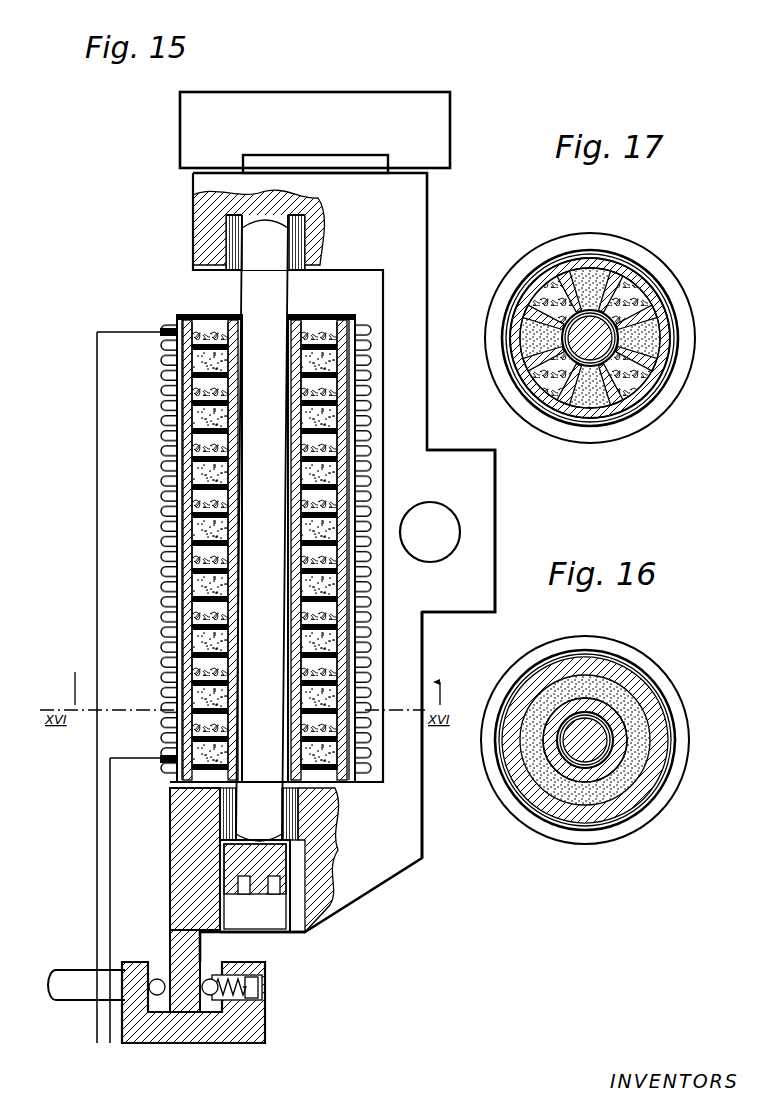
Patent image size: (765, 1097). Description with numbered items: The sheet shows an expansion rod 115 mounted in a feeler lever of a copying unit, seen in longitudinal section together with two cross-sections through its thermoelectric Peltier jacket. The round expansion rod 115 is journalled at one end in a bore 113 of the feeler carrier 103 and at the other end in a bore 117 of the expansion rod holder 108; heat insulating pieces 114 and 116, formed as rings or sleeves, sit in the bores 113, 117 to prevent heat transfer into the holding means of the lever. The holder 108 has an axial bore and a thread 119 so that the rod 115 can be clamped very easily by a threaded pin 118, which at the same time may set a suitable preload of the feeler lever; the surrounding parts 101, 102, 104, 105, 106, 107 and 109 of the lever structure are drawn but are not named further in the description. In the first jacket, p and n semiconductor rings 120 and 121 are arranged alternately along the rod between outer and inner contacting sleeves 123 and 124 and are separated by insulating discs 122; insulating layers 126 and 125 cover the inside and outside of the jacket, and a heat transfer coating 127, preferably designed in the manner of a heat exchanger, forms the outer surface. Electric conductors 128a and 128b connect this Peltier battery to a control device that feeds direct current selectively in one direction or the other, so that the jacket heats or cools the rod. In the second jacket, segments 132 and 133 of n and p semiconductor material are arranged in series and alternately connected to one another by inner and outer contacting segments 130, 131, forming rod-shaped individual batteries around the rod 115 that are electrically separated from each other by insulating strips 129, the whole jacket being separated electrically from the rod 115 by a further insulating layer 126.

In FIG. 15, the head block 101 is at (197, 118).
In FIG. 15, the spacer block 102 is at (300, 163).
In FIG. 15, the feeler carrier 103 is at (213, 221).
In FIG. 15, the body 104 is at (405, 405).
In FIG. 15, the body projection 105 is at (483, 500).
In FIG. 15, the bore 106 is at (450, 529).
In FIG. 15, the lower body portion 107 is at (410, 660).
In FIG. 15, the expansion rod holder 108 is at (385, 855).
In FIG. 15, the base 109 is at (255, 1020).
In FIG. 15, the bore 113 is at (225, 246).
In FIG. 15, the heat insulating piece 114 is at (225, 265).
In FIG. 15, the expansion rod 115 is at (262, 297).
In FIG. 17, the expansion rod 115 is at (535, 272).
In FIG. 16, the expansion rod 115 is at (572, 700).
In FIG. 15, the heat insulating piece 116 is at (222, 812).
In FIG. 15, the bore 117 is at (220, 826).
In FIG. 15, the threaded pin 118 is at (255, 886).
In FIG. 15, the thread 119 is at (226, 908).
In FIG. 15, the p semi-conductor ring 120 is at (183, 441).
In FIG. 15, the n semi-conductor ring 121 is at (182, 412).
In FIG. 16, the n semi-conductor ring 121 is at (605, 785).
In FIG. 15, the insulating disc 122 is at (160, 362).
In FIG. 15, the outer contacting sleeve 123 is at (186, 474).
In FIG. 16, the outer contacting sleeve 123 is at (580, 822).
In FIG. 15, the inner contacting sleeve 124 is at (190, 501).
In FIG. 16, the inner contacting sleeve 124 is at (625, 765).
In FIG. 15, the insulating layer 125 is at (188, 538).
In FIG. 17, the insulating layer 125 is at (577, 262).
In FIG. 16, the insulating layer 125 is at (553, 820).
In FIG. 15, the insulating layer 126 is at (185, 572).
In FIG. 17, the insulating layer 126 is at (617, 265).
In FIG. 16, the insulating layer 126 is at (600, 715).
In FIG. 15, the heat transfer coating 127 is at (185, 607).
In FIG. 17, the heat transfer coating 127 is at (520, 280).
In FIG. 16, the heat transfer coating 127 is at (512, 803).
In FIG. 15, the electric conductor 128a is at (98, 664).
In FIG. 15, the electric conductor 128b is at (131, 758).
In FIG. 17, the insulating strip 129 is at (650, 277).
In FIG. 17, the inner contacting segment 130 is at (505, 318).
In FIG. 17, the outer ring 131 is at (668, 366).
In FIG. 17, the n semi-conductor segment 132 is at (650, 392).
In FIG. 17, the p semi-conductor segment 133 is at (630, 418).